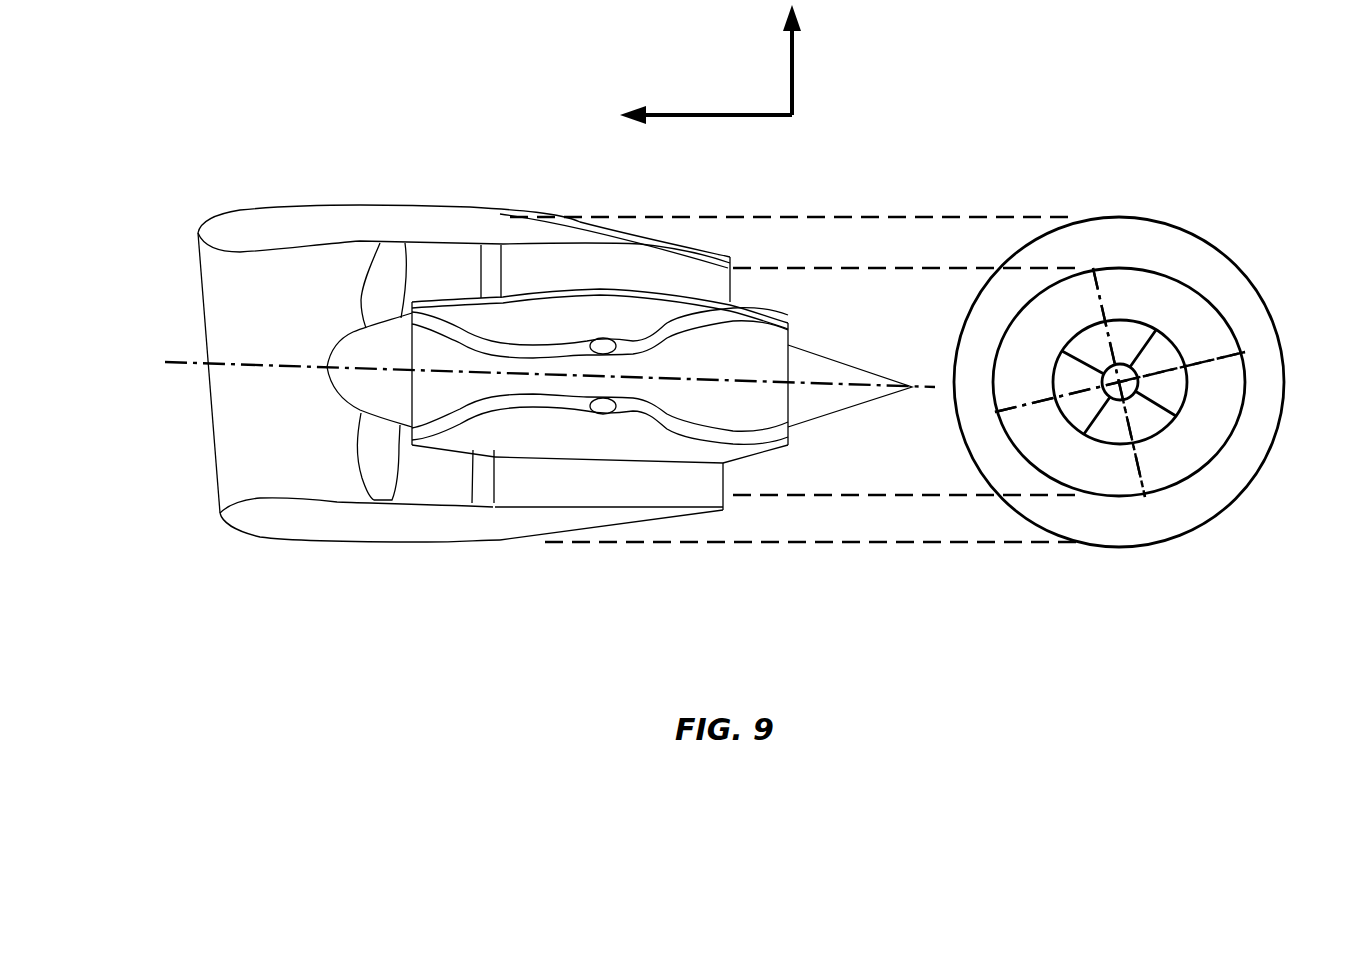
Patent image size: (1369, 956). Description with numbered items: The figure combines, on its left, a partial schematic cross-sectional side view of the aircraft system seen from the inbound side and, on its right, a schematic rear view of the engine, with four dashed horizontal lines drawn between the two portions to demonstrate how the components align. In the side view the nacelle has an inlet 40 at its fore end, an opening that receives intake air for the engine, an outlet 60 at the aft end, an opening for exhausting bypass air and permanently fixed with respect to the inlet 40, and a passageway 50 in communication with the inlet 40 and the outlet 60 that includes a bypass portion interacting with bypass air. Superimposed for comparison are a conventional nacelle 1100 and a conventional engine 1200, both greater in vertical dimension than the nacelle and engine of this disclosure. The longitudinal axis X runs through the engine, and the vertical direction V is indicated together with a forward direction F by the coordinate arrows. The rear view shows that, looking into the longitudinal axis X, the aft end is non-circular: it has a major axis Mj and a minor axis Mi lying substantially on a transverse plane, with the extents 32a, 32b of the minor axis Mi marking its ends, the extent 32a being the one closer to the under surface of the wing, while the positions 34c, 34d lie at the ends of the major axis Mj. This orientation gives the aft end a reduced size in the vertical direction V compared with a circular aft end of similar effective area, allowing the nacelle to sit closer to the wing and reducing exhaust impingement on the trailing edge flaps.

The inlet 40 is at (170, 296).
The passageway 50 is at (322, 475).
The outlet 60 is at (750, 497).
The conventional nacelle 1100 is at (671, 536).
The conventional engine 1200 is at (553, 278).
The extent of the minor axis 32a is at (1092, 270).
The extent of the minor axis 32b is at (1140, 495).
The third position on inner ring 34c is at (997, 413).
The fourth position on inner ring 34d is at (1243, 352).
The minor axis Mi is at (1142, 485).
The major axis Mj is at (1245, 352).
The longitudinal axis X is at (885, 388).
The forward direction F is at (712, 113).
The vertical direction V is at (794, 62).